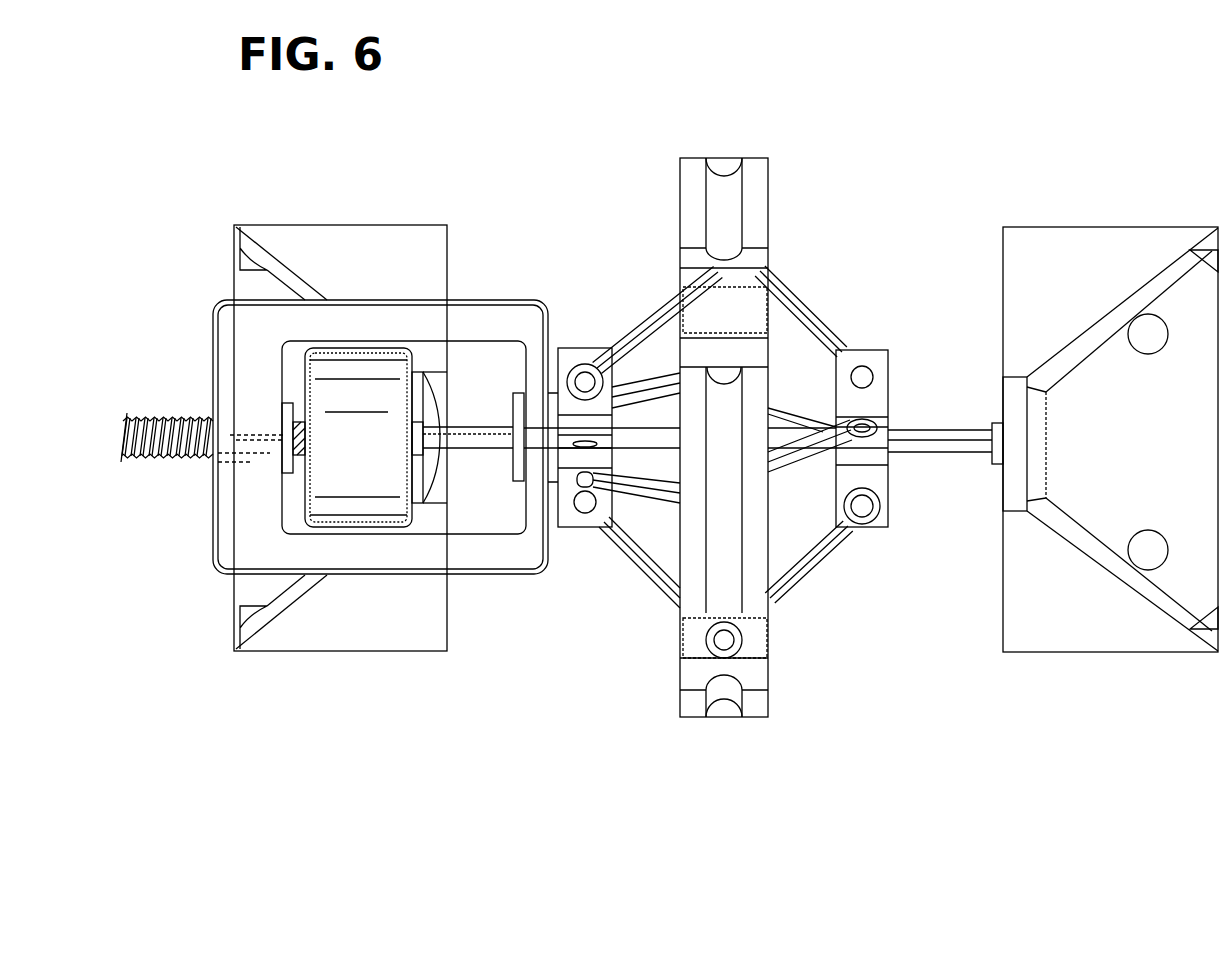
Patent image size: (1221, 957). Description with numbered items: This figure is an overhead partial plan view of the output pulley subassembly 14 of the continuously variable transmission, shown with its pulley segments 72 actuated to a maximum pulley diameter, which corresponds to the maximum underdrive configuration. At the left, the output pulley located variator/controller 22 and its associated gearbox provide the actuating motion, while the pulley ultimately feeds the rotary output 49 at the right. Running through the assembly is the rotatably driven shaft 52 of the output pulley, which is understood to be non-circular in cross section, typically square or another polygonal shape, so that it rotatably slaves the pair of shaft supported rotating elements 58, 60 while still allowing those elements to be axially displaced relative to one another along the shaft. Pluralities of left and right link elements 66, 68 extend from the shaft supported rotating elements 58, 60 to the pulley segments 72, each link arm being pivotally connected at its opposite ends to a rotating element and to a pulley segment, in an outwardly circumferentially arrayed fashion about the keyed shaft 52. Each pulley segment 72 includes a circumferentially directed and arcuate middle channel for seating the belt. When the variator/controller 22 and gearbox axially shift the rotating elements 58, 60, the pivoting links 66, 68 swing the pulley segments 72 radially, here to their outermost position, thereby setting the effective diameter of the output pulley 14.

The output pulley subassembly 14 is at (726, 116).
The variator/controller 22 is at (348, 370).
The rotary output 49 is at (1060, 245).
The shaft 52 is at (471, 440).
The shaft supported rotating element 58 is at (877, 360).
The shaft supported rotating element 60 is at (577, 343).
The left link elements 66 is at (798, 310).
The right link elements 68 is at (632, 395).
The pulley segments 72 is at (692, 168).